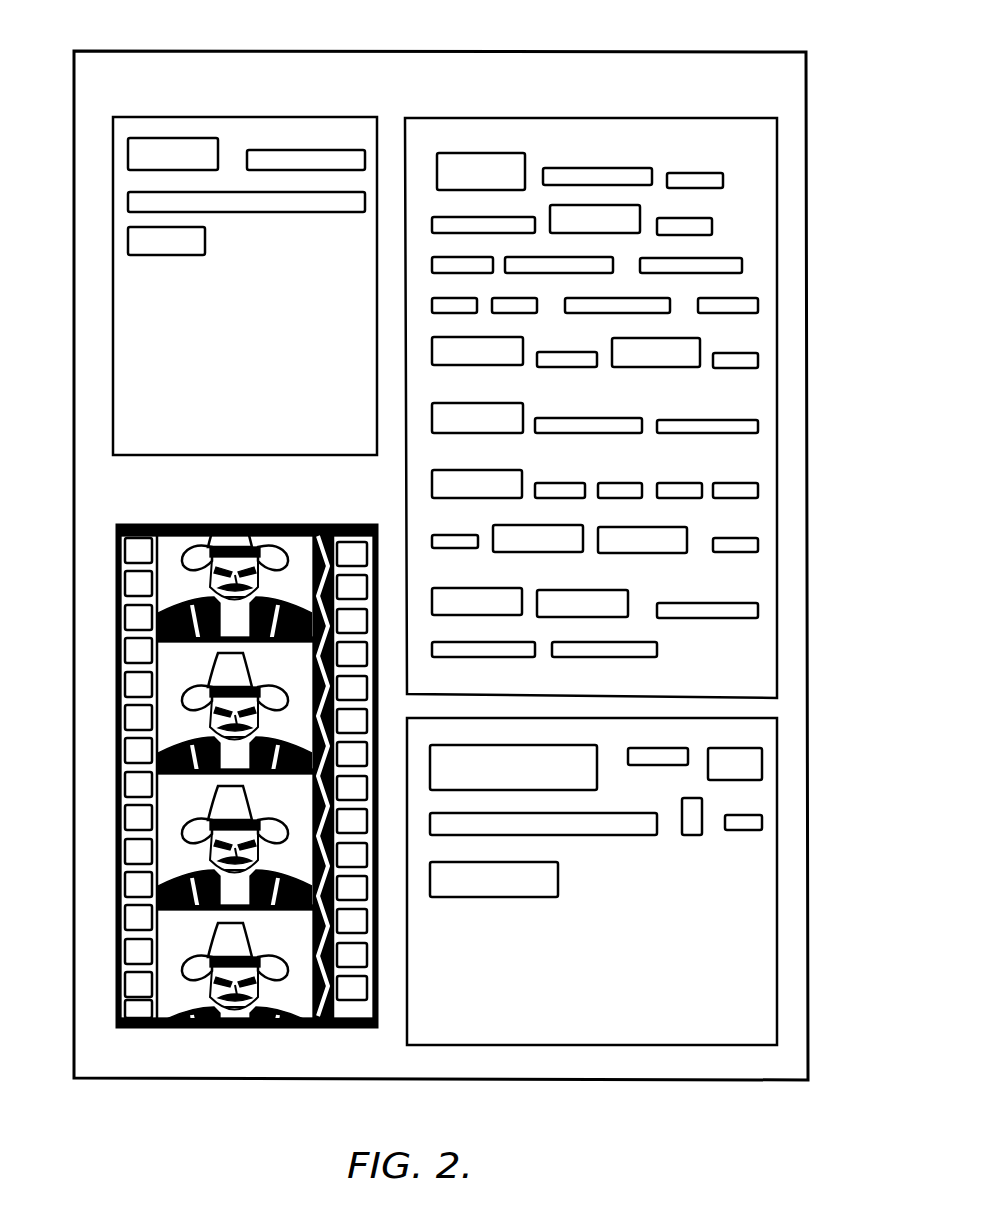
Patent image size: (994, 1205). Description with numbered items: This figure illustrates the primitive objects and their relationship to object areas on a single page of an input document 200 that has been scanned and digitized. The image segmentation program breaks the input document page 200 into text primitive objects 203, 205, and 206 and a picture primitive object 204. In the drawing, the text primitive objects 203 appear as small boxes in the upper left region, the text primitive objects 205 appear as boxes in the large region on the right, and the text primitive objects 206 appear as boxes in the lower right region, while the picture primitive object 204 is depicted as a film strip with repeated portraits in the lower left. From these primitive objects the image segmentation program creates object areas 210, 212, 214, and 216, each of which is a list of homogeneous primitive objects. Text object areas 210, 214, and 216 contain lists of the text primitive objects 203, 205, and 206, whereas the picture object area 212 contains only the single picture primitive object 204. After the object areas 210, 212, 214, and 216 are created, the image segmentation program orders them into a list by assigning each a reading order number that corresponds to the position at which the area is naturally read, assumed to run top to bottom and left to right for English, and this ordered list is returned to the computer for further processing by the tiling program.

The input document page 200 is at (130, 45).
The text primitive object 203 is at (250, 150).
The picture primitive object 204 is at (201, 785).
The text primitive object 205 is at (522, 153).
The text primitive object 206 is at (597, 745).
The text object area 210 is at (105, 334).
The picture object area 212 is at (106, 648).
The text object area 214 is at (460, 106).
The text object area 216 is at (788, 806).